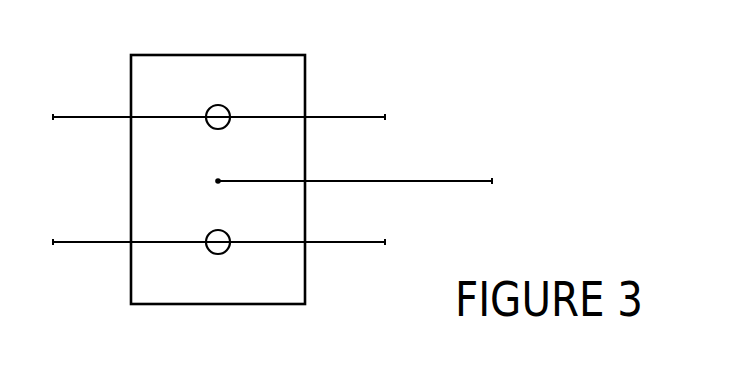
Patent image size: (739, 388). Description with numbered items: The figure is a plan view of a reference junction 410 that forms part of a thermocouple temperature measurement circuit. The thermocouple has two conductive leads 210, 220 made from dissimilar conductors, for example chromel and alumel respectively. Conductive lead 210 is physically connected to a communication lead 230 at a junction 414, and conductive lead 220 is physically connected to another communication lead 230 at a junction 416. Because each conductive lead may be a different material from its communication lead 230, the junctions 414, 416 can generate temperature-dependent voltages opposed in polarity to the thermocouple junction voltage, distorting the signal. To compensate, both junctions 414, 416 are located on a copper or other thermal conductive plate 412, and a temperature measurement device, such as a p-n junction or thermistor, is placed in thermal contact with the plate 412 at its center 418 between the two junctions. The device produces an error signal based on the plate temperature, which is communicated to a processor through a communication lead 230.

The reference junction 410 is at (369, 193).
The thermal conductive plate 412 is at (268, 289).
The junction 414 is at (218, 105).
The junction 416 is at (206, 254).
The center of conductive plate 418 is at (216, 180).
The conductive lead 210 is at (80, 117).
The conductive lead 220 is at (87, 244).
The communication lead 230 is at (348, 117).